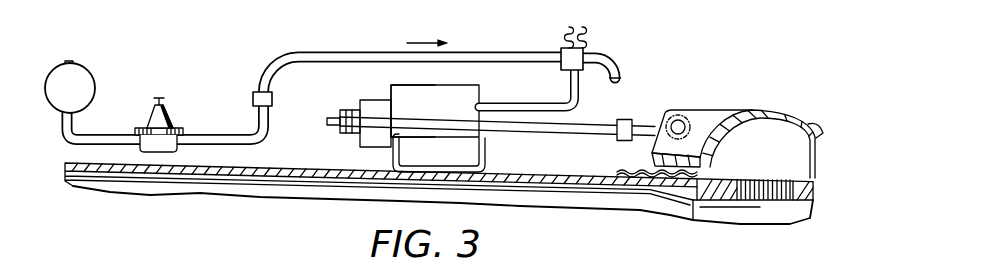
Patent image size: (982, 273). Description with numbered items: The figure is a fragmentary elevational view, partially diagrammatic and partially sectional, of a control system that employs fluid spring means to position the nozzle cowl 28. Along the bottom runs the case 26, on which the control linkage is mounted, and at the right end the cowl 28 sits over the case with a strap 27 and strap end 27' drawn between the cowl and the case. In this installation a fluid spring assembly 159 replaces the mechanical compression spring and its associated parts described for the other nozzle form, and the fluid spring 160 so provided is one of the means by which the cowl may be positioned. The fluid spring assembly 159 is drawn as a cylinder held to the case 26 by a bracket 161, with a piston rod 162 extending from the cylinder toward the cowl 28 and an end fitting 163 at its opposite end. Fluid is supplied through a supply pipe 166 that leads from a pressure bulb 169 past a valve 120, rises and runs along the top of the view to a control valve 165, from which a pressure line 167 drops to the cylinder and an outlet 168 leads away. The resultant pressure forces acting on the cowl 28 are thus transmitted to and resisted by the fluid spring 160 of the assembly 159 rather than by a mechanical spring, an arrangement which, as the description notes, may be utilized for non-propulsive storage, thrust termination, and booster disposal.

The case 26 is at (320, 169).
The strap 27 is at (755, 174).
The strap end 27' is at (725, 207).
The cowl 28 is at (797, 120).
The valve 120 is at (167, 123).
The fluid spring assembly 159 is at (480, 91).
The fluid spring 160 is at (391, 89).
The bracket 161 is at (486, 168).
The piston rod 162 is at (580, 121).
The end fitting 163 is at (362, 105).
The control valve 165 is at (583, 52).
The supply pipe 166 is at (346, 49).
The pressure line 167 is at (571, 92).
The outlet 168 is at (621, 73).
The pressure bulb 169 is at (83, 80).